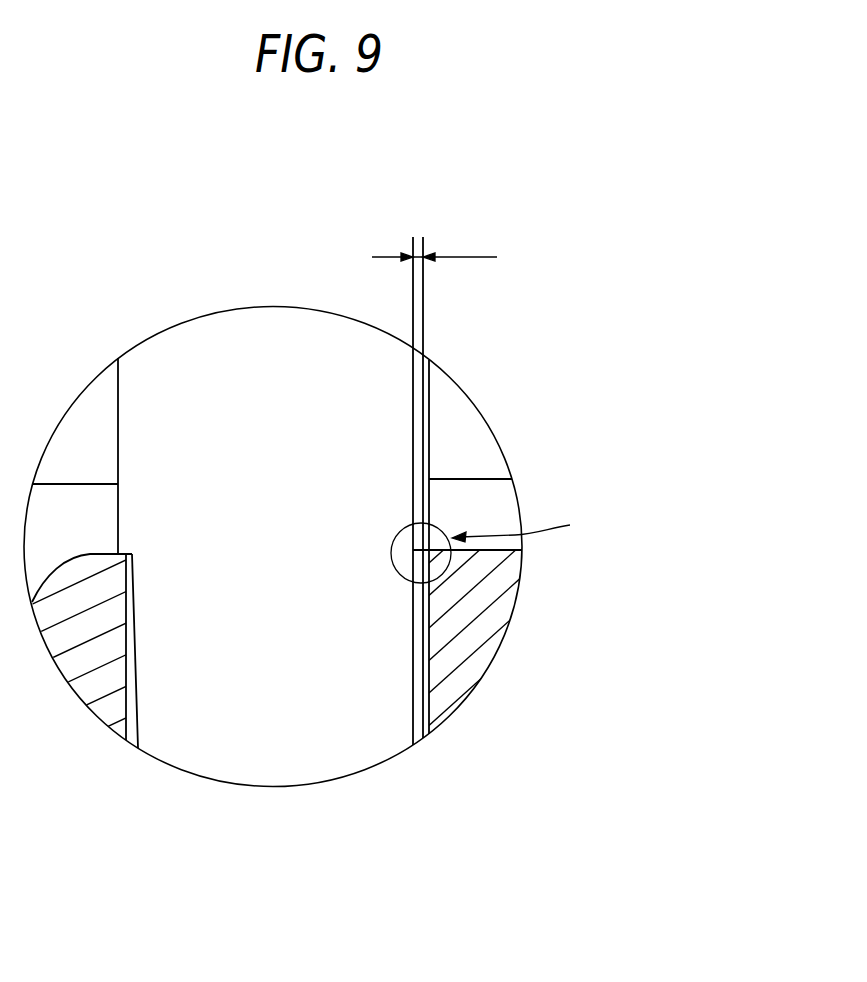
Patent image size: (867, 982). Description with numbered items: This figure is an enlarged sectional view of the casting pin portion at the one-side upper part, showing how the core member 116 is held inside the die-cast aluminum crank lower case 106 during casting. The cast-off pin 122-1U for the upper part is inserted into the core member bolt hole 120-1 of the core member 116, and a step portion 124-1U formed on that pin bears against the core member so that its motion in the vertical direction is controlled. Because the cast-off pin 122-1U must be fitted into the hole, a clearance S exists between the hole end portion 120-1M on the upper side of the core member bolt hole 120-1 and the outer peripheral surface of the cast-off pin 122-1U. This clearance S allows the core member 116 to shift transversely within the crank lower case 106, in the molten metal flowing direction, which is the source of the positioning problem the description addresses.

The cast-off pin 122-1U is at (198, 347).
The step portion 124-1U is at (433, 527).
The crank lower case 106 is at (498, 508).
The hole end portion 120-1M is at (452, 570).
The core member 116 is at (480, 622).
The core member bolt hole 120-1 is at (420, 652).
The clearance S is at (434, 243).